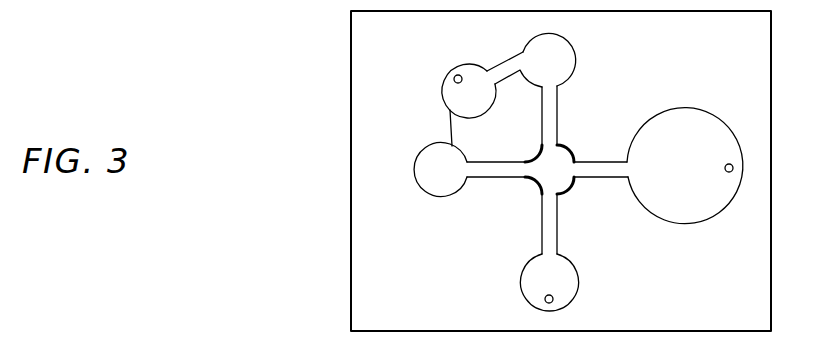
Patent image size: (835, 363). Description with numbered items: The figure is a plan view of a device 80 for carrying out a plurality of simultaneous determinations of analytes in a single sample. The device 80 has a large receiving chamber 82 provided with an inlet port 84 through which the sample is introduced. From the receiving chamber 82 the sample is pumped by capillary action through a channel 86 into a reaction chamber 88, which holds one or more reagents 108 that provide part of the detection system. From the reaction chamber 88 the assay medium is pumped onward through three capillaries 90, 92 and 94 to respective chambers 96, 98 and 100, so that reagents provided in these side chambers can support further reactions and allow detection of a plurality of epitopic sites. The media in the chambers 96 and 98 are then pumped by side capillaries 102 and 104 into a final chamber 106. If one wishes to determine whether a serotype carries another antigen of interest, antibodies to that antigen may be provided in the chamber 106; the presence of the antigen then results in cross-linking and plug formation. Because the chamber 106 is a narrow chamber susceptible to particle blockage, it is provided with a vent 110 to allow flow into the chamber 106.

The device 80 is at (590, 332).
The receiving chamber 82 is at (669, 215).
The inlet port 84 is at (733, 167).
The channel 86 is at (609, 169).
The reaction chamber 88 is at (528, 181).
The capillary 90 is at (541, 111).
The capillary 92 is at (477, 160).
The capillary 94 is at (558, 241).
The chamber 96 is at (575, 51).
The chamber 98 is at (428, 185).
The chamber 100 is at (533, 288).
The side capillary 102 is at (502, 61).
The side capillary 104 is at (449, 128).
The final chamber 106 is at (443, 97).
The reagents 108 is at (559, 151).
The vent 110 is at (454, 79).